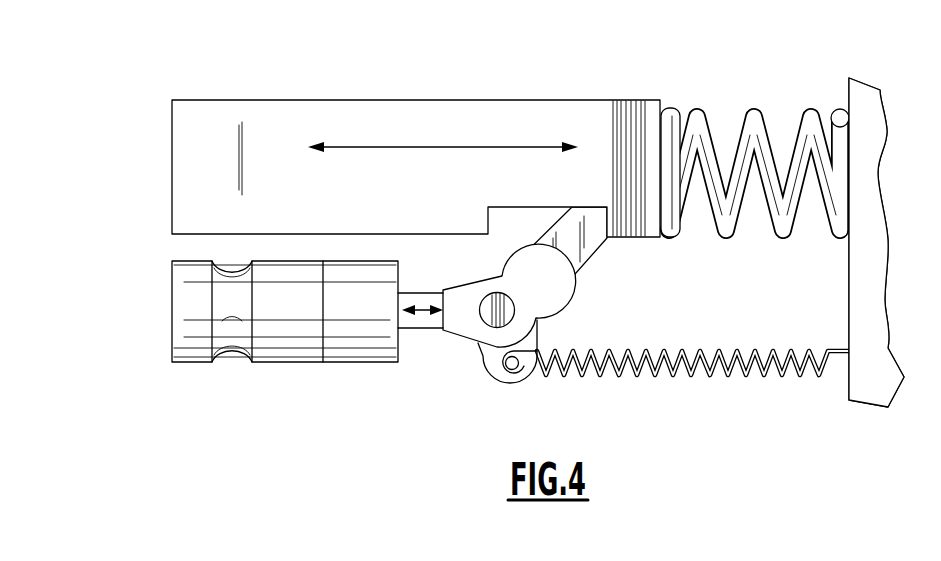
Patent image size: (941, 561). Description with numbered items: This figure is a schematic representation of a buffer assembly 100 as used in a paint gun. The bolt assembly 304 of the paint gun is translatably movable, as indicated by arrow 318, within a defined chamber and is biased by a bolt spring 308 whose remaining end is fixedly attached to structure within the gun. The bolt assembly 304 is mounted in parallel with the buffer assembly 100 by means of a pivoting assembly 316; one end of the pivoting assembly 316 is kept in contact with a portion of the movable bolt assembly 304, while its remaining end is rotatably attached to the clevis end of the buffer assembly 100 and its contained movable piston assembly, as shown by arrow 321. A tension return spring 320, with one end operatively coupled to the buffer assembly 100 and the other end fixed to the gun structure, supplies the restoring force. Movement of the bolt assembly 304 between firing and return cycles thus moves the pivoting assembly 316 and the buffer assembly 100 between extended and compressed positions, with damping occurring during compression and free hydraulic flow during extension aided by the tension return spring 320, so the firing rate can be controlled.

The buffer assembly 100 is at (172, 312).
The bolt assembly 304 is at (228, 100).
The bolt spring 308 is at (772, 110).
The pivoting assembly 316 is at (601, 246).
The arrow 318 is at (418, 147).
The tension return spring 320 is at (687, 377).
The arrow 321 is at (420, 314).